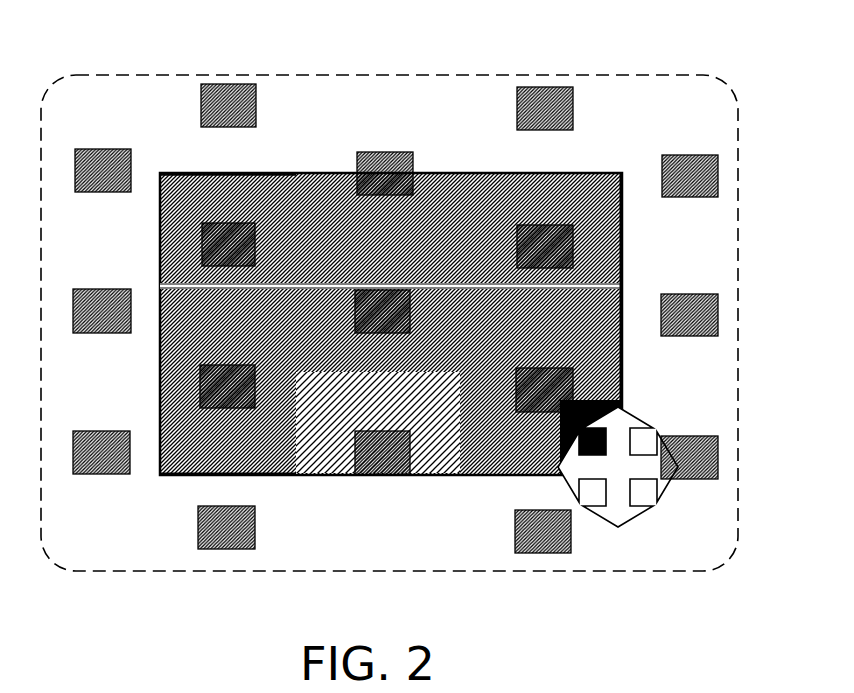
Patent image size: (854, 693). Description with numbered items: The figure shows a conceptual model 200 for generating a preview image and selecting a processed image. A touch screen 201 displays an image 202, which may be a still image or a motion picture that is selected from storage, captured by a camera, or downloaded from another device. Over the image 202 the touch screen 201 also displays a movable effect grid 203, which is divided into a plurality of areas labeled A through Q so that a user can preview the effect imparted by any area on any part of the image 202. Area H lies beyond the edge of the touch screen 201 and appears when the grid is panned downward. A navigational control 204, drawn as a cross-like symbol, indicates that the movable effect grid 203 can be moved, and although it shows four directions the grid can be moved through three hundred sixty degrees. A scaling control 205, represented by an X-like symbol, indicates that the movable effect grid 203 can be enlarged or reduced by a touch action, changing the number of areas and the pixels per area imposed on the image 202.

The conceptual model 200 is at (777, 54).
The touch screen 201 is at (422, 288).
The image 202 is at (622, 222).
The movable effect grid 203 is at (722, 247).
The navigational control 204 is at (640, 518).
The scaling control 205 is at (272, 173).